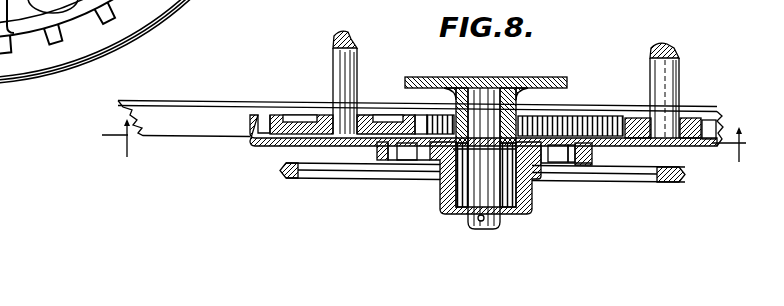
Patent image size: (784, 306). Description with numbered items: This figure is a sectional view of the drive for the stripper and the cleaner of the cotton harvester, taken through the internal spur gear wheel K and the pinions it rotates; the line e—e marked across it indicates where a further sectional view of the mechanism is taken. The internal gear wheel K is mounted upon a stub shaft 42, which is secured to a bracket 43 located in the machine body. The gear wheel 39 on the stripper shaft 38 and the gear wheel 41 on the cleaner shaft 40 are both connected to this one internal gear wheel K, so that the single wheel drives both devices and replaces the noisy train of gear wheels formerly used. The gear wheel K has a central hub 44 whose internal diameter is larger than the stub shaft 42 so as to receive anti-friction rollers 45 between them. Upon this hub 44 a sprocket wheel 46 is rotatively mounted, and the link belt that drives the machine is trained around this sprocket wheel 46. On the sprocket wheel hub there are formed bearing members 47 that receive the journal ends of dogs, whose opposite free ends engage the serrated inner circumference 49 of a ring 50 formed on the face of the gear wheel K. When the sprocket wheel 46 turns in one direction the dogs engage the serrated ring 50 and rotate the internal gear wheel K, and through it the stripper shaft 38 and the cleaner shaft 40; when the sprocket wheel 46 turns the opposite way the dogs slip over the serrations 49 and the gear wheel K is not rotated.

The stripper shaft 38 is at (343, 72).
The gear wheel 39 is at (296, 119).
The pillar pin 40 is at (664, 75).
The gear wheel 41 is at (689, 128).
The stub shaft 42 is at (491, 97).
The bracket 43 is at (570, 82).
The central hub 44 is at (451, 199).
The anti-friction rollers 45 is at (446, 213).
The sprocket wheel 46 is at (617, 185).
The bearing members 47 is at (405, 151).
The serrated inner circumference 49 is at (594, 158).
The ring 50 is at (375, 152).
The internal gear wheel K is at (251, 124).
The section line e- e is at (421, 140).